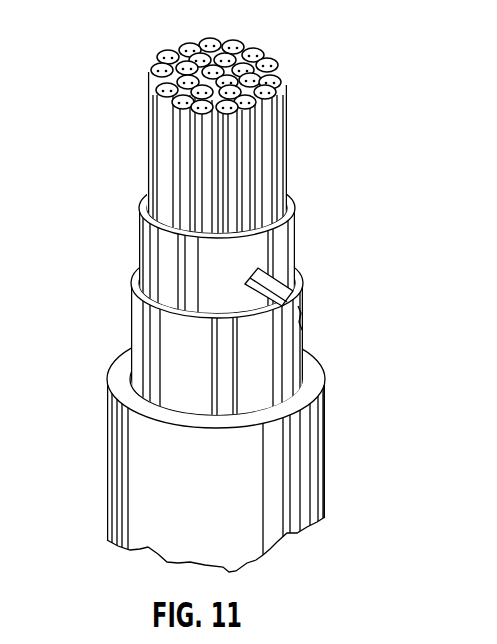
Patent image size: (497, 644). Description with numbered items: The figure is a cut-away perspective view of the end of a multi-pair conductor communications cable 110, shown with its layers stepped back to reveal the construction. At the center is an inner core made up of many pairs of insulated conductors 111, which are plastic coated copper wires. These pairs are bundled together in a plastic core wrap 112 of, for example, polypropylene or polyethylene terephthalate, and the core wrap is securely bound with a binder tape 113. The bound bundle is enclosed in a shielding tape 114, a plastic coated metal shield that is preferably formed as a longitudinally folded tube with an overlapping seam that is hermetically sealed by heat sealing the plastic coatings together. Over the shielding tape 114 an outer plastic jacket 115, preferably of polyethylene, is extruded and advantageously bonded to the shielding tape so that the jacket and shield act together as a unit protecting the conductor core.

The communications cable 110 is at (149, 130).
The insulated conductors 111 is at (262, 55).
The plastic core wrap 112 is at (158, 240).
The binder tape 113 is at (263, 277).
The shielding tape 114 is at (157, 330).
The outer plastic jacket 115 is at (313, 458).